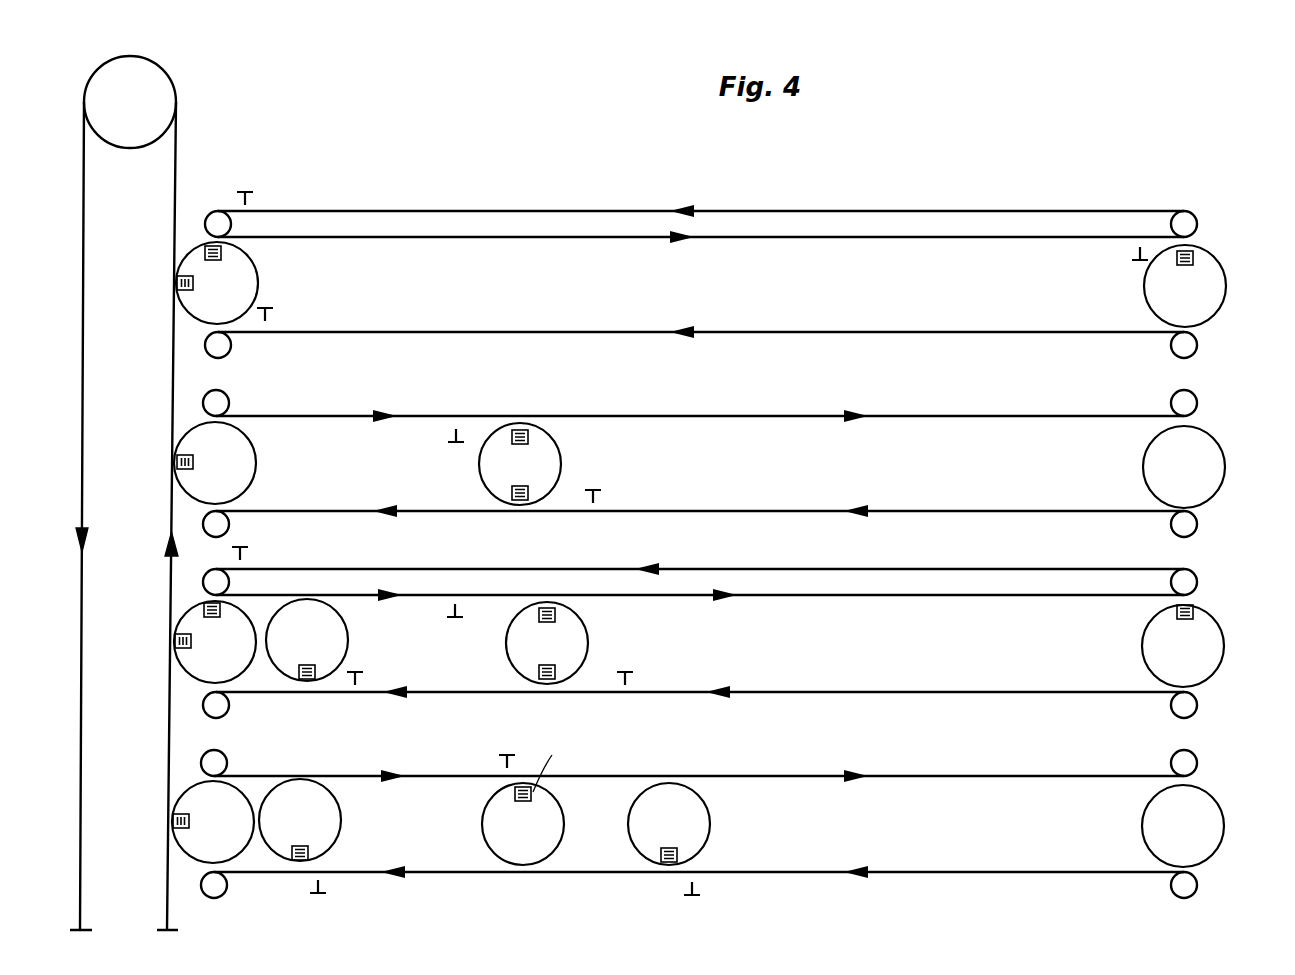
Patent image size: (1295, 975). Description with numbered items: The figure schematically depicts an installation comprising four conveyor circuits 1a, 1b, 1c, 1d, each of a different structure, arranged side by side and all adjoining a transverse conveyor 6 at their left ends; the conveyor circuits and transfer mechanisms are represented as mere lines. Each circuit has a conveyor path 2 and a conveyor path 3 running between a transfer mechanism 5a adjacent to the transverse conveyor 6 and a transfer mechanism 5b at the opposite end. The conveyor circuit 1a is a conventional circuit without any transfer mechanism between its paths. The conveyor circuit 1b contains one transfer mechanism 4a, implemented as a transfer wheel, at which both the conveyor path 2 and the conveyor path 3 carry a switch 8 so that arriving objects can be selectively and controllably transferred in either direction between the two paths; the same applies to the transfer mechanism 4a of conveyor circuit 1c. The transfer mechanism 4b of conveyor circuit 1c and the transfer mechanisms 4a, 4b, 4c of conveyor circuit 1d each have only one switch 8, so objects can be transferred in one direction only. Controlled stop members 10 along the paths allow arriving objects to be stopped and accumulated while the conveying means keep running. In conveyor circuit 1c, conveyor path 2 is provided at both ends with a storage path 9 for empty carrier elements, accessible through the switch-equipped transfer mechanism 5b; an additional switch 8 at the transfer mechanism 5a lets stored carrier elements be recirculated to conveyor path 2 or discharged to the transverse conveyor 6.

In FIG. 4, the transverse conveyor 6 is at (177, 160).
In FIG. 4, the storage path 9 is at (575, 213).
In FIG. 4, the conveyor path 2 is at (745, 238).
In FIG. 4, the conveyor path 3 is at (580, 333).
In FIG. 4, the transfer mechanism 5a is at (258, 281).
In FIG. 4, the additional transfer mechanism 5b is at (1222, 266).
In FIG. 4, the transfer mechanism 4a is at (555, 440).
In FIG. 4, the transfer mechanism 4b is at (330, 600).
In FIG. 4, the transfer mechanism 4c is at (710, 820).
In FIG. 4, the switch 8 is at (185, 276).
The controlled stop member 10 is at (238, 556).
In FIG. 4, the conveyor circuit 1a is at (1281, 333).
In FIG. 4, the conveyor circuit 1b is at (1269, 505).
In FIG. 4, the conveyor circuit 1c is at (1263, 692).
In FIG. 4, the conveyor circuit 1d is at (1258, 875).